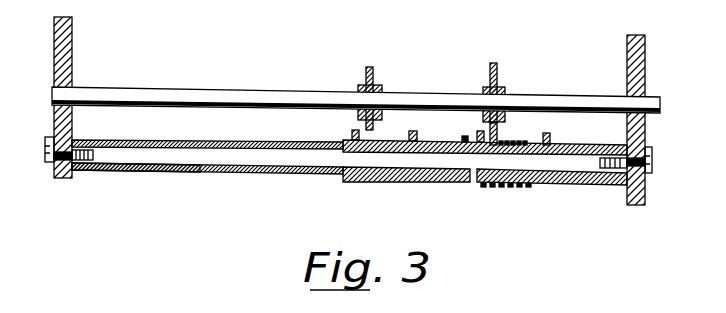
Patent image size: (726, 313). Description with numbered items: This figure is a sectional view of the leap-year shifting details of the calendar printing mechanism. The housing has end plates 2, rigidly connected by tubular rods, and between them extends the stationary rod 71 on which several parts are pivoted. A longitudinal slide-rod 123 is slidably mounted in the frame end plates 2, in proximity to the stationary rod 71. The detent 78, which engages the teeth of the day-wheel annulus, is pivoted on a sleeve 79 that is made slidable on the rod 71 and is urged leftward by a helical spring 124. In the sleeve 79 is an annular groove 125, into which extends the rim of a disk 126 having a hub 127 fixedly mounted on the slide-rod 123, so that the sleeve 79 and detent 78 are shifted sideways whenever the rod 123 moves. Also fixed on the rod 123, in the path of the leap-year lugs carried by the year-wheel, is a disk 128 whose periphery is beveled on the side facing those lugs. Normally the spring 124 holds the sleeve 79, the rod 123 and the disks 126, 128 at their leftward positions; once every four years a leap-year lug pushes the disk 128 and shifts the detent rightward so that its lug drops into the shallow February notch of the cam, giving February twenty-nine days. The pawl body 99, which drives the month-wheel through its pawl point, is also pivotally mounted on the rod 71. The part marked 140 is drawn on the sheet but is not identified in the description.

The end plates 2 is at (60, 182).
The stationary rod 71 is at (265, 157).
The detent 78 is at (480, 140).
The sleeve 79 is at (517, 143).
The pawl body 99 is at (412, 131).
The longitudinal rod 123 is at (181, 89).
The helical spring 124 is at (510, 186).
The annular groove 125 is at (490, 186).
The disk 126 is at (497, 72).
The hub 127 is at (480, 132).
The disk 128 is at (365, 72).
The tube wall 140 is at (127, 173).